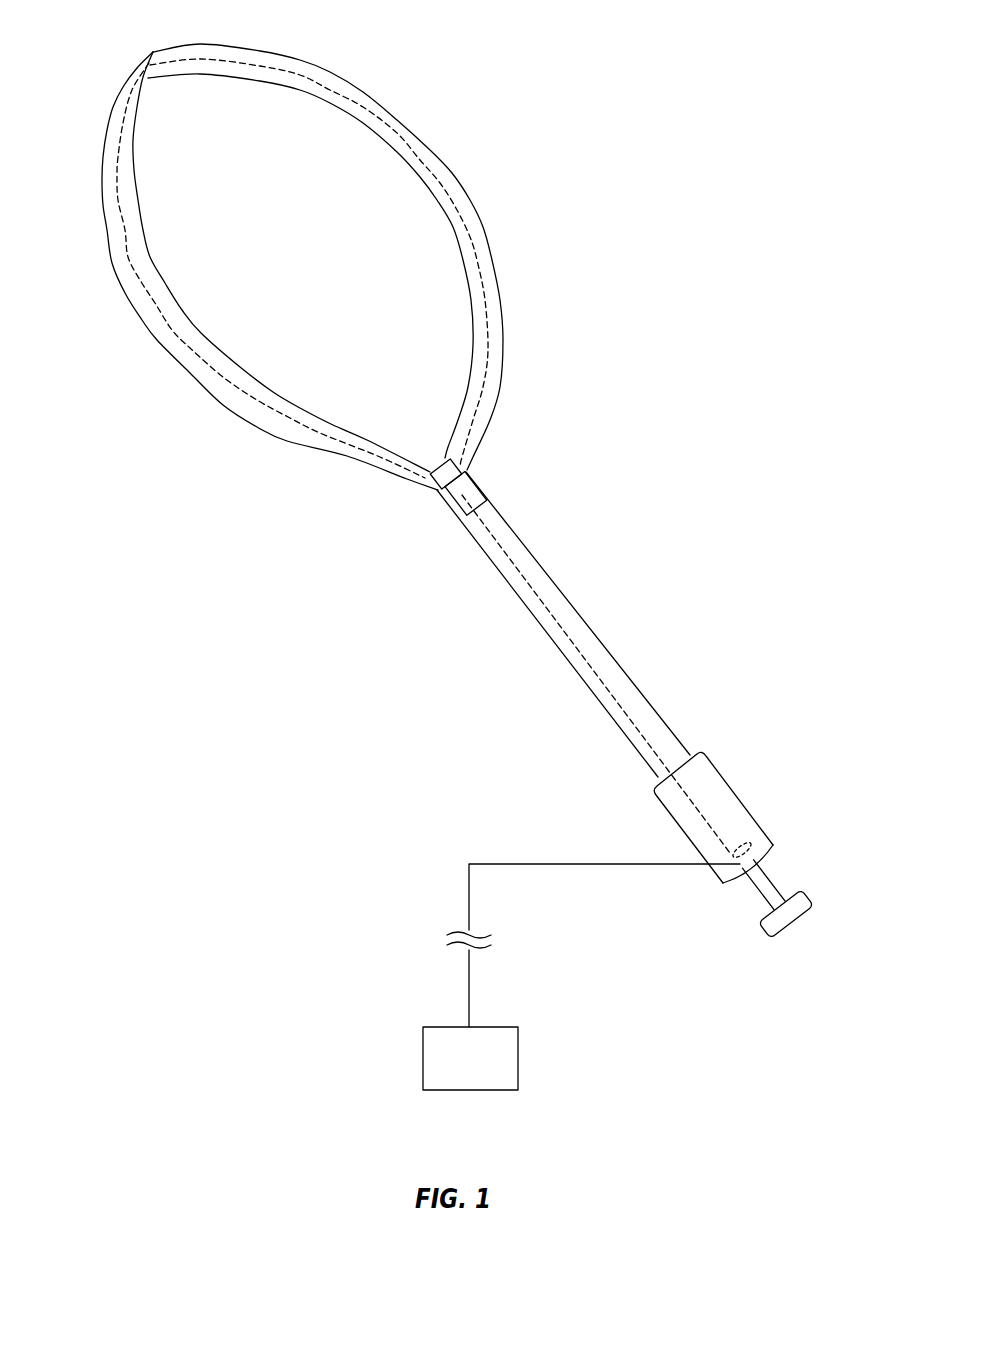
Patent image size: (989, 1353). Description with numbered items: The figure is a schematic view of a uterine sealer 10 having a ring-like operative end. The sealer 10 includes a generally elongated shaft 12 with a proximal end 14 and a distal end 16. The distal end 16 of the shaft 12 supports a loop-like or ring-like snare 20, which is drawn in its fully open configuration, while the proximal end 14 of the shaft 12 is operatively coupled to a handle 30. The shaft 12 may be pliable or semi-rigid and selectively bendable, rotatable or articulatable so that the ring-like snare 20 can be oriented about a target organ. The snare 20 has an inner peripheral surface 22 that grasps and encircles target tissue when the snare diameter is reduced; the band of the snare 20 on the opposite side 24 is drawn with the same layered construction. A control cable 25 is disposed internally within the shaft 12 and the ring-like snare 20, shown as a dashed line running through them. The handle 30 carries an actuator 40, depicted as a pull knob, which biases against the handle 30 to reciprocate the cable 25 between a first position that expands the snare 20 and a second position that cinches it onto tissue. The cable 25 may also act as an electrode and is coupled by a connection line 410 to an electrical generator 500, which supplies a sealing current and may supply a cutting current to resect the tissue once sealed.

The sealer 10 is at (582, 156).
The shaft 12 is at (517, 548).
The proximal end 14 is at (632, 682).
The distal end 16 is at (482, 544).
The ring-like snare 20 is at (131, 66).
The inner peripheral surface 22 is at (418, 172).
The lower band of loop 24 is at (110, 218).
The control cable 25 is at (175, 333).
The handle 30 is at (690, 798).
The actuator 40 is at (814, 896).
The connection line 410 is at (498, 862).
The electrical generator 500 is at (518, 1058).